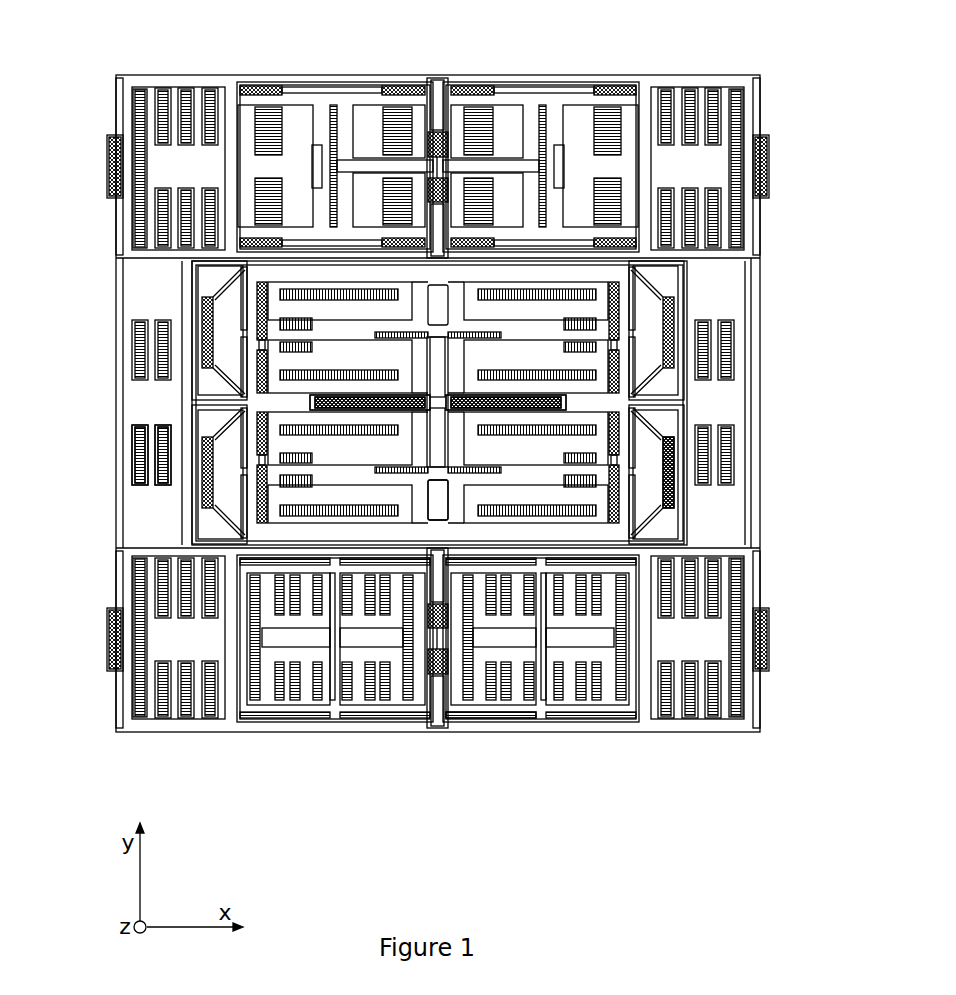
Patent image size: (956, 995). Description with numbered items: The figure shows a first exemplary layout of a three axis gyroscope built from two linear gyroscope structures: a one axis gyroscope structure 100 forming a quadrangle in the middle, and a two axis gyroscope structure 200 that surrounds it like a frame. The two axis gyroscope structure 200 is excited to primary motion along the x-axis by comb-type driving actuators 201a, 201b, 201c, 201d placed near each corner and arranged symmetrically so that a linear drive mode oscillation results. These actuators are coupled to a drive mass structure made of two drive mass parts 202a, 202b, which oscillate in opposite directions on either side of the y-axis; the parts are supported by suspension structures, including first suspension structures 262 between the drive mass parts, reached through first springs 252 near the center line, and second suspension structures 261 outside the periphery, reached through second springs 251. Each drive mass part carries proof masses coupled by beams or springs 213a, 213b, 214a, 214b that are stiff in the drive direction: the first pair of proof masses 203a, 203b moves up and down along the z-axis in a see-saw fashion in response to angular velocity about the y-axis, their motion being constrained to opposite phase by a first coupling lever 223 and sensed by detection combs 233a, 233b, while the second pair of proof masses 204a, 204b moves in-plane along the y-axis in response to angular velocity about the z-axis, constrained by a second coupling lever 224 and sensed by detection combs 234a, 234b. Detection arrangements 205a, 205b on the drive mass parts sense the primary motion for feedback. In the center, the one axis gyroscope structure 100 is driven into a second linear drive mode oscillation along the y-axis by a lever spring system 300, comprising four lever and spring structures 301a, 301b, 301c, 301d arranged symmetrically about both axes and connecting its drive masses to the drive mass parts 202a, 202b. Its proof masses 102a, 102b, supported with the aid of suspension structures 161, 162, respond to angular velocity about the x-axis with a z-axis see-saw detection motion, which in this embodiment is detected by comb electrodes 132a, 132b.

The one axis gyroscope structure 100 is at (314, 326).
The two axis gyroscope structure 200 is at (726, 64).
The lever spring system 300 is at (640, 365).
The second springs 251 is at (118, 92).
The second suspension structures 261 is at (108, 166).
The first suspension structures 262 is at (428, 192).
The first springs 252 is at (437, 78).
The driving actuator 201a is at (160, 132).
The driving actuator 201b is at (712, 122).
The driving actuator 201c is at (180, 638).
The driving actuator 201d is at (700, 640).
The drive mass part 202a is at (147, 280).
The drive mass part 202b is at (703, 275).
The first proof mass 203a is at (318, 110).
The first proof mass 203b is at (525, 110).
The second proof mass 204a is at (290, 720).
The second proof mass 204b is at (508, 720).
The detection arrangement 205a is at (150, 425).
The detection arrangement 205b is at (725, 435).
The beam or spring 213a is at (395, 93).
The beam or spring 213b is at (602, 93).
The beam or spring 214a is at (355, 720).
The beam or spring 214b is at (563, 725).
The first coupling lever 223 is at (500, 165).
The second coupling lever 224 is at (465, 716).
The detection comb 233a is at (258, 128).
The detection comb 233b is at (612, 130).
The detection comb 234a is at (275, 690).
The detection comb 234b is at (600, 720).
The proof mass 102a is at (630, 258).
The proof mass 102b is at (640, 550).
The comb electrode 132a is at (143, 322).
The comb electrode 132b is at (153, 472).
The suspension structure 161 is at (465, 497).
The suspension structure 162 is at (670, 453).
The lever and spring structure 301a is at (225, 337).
The lever and spring structure 301b is at (650, 322).
The lever and spring structure 301c is at (220, 492).
The lever and spring structure 301d is at (648, 480).